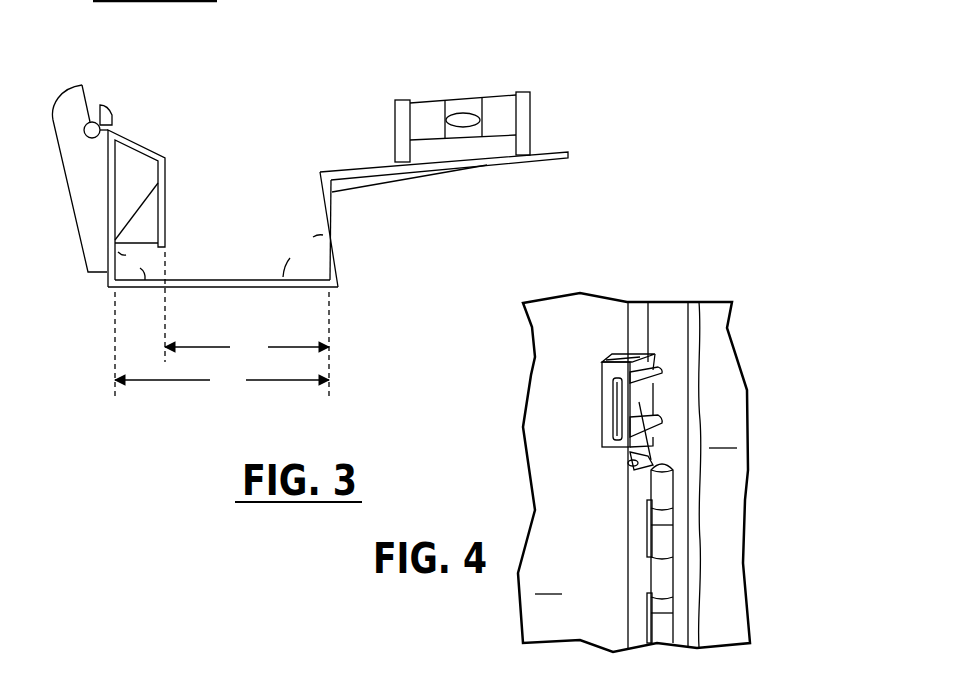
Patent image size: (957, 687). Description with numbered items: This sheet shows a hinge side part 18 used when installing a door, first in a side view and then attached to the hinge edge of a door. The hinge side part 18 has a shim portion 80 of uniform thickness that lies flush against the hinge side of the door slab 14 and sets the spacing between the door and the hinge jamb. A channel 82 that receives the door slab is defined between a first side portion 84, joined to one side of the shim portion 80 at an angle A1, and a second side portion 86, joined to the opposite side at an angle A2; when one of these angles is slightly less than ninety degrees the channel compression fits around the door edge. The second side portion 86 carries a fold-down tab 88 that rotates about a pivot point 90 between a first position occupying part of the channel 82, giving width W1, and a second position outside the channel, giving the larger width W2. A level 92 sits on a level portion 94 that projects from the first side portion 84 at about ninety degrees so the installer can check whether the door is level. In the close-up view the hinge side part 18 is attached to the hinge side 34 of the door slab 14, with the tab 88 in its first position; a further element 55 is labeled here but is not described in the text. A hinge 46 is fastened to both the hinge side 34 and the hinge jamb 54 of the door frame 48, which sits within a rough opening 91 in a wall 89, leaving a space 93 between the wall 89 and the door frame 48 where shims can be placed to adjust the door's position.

In FIG. 4, the door slab 14 is at (634, 472).
In FIG. 3, the hinge side part 18 is at (384, 41).
In FIG. 4, the hinge side part 18 is at (597, 404).
In FIG. 4, the hinge side 34 is at (626, 328).
In FIG. 4, the hinge 46 is at (658, 583).
In FIG. 4, the door frame 48 is at (667, 314).
In FIG. 4, the hinge jamb 54 is at (675, 367).
In FIG. 4, the channel 55 is at (637, 330).
In FIG. 3, the shim portion 80 is at (238, 290).
In FIG. 3, the channel 82 is at (218, 152).
In FIG. 3, the first side portion 84 is at (337, 237).
In FIG. 4, the second side portion 86 is at (628, 470).
In FIG. 3, the fold-down tab 88 is at (150, 143).
In FIG. 4, the fold-down tab 88 is at (620, 355).
In FIG. 4, the wall 89 is at (723, 437).
In FIG. 3, the pivot point 90 is at (93, 138).
In FIG. 4, the rough opening 91 is at (698, 525).
In FIG. 3, the level 92 is at (498, 97).
In FIG. 4, the space 93 is at (693, 407).
In FIG. 3, the level portion 94 is at (540, 162).